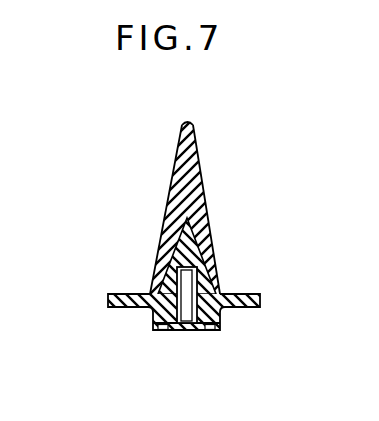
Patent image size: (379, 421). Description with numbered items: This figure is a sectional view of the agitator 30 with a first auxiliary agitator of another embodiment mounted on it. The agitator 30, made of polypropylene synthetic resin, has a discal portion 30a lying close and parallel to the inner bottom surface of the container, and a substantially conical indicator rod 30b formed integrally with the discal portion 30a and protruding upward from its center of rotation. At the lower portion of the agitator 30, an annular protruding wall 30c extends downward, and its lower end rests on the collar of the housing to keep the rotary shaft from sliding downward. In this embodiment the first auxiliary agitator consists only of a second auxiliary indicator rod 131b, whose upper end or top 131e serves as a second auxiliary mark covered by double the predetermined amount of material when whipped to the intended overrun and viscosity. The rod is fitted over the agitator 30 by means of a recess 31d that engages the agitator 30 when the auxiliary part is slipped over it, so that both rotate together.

The agitator 30 is at (218, 276).
The discal portion 30a is at (245, 307).
The indicator rod 30b is at (205, 208).
The annular protruding wall 30c is at (220, 320).
The recess 31d is at (170, 246).
The second auxiliary indicator rod 131b is at (176, 162).
The top of second auxiliary indicator rod 131e is at (182, 124).